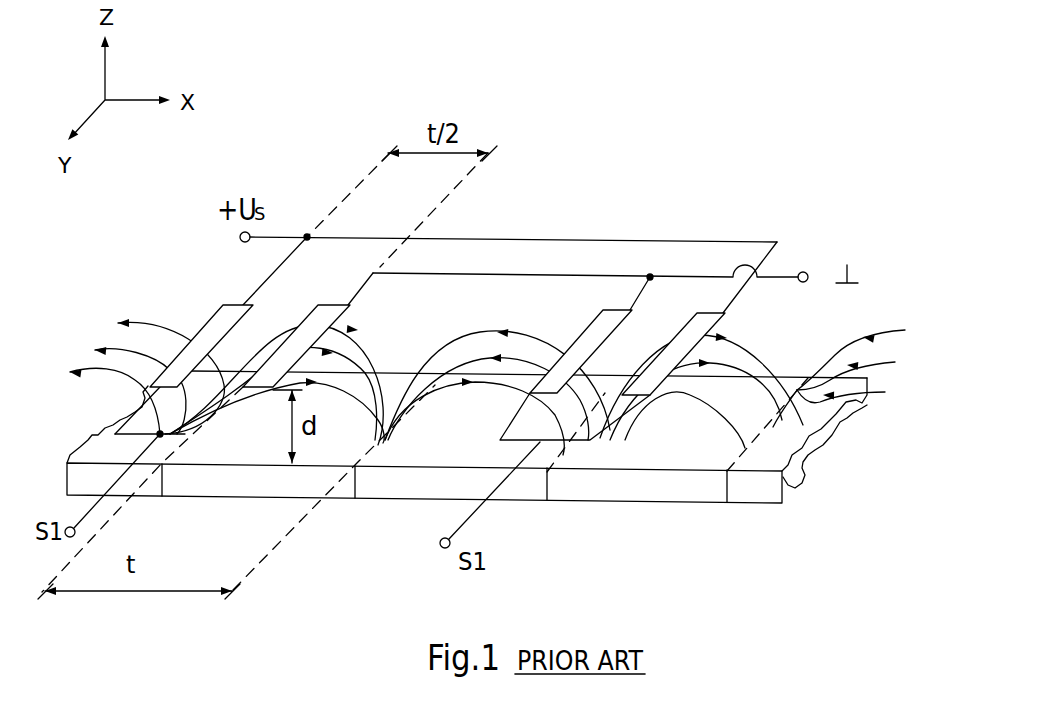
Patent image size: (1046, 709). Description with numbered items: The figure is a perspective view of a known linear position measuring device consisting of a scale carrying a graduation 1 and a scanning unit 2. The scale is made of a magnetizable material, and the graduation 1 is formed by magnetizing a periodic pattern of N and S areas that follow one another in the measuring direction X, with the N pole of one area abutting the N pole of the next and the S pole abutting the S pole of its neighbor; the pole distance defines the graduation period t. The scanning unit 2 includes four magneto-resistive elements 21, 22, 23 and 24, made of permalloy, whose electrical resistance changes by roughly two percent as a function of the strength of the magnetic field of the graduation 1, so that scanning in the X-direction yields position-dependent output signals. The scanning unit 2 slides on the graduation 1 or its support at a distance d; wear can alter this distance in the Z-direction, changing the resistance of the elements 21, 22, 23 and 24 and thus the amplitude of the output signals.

The graduation 1 is at (805, 476).
The scanning unit 2 is at (706, 233).
The magneto-resistive element 21 is at (212, 317).
The magneto-resistive element 22 is at (312, 317).
The magneto-resistive element 23 is at (589, 336).
The magneto-resistive element 24 is at (712, 320).